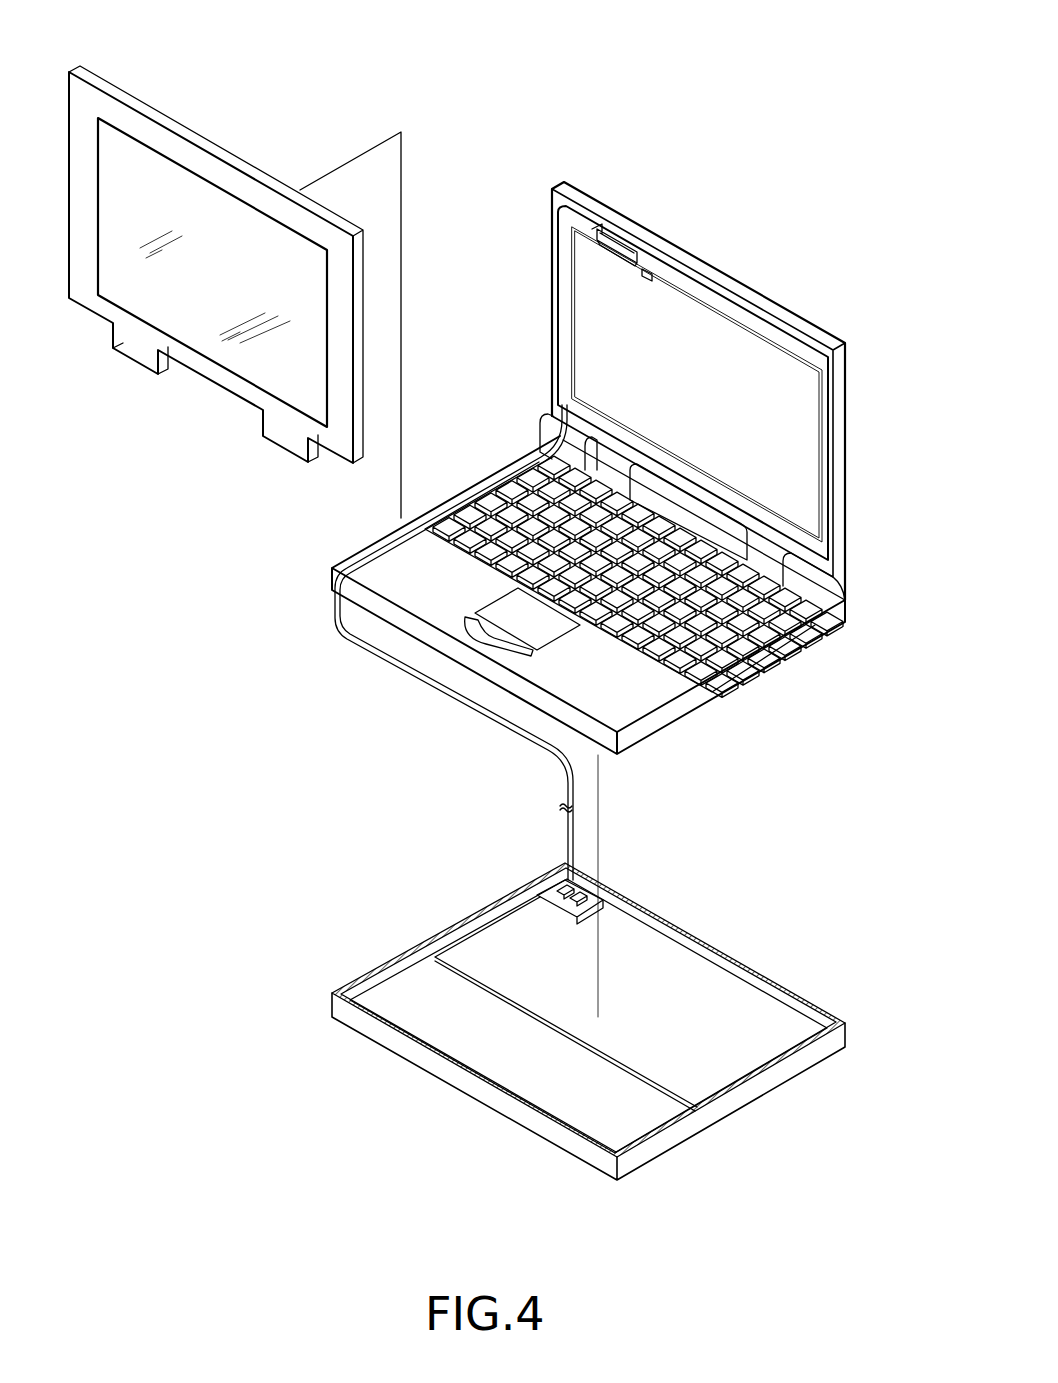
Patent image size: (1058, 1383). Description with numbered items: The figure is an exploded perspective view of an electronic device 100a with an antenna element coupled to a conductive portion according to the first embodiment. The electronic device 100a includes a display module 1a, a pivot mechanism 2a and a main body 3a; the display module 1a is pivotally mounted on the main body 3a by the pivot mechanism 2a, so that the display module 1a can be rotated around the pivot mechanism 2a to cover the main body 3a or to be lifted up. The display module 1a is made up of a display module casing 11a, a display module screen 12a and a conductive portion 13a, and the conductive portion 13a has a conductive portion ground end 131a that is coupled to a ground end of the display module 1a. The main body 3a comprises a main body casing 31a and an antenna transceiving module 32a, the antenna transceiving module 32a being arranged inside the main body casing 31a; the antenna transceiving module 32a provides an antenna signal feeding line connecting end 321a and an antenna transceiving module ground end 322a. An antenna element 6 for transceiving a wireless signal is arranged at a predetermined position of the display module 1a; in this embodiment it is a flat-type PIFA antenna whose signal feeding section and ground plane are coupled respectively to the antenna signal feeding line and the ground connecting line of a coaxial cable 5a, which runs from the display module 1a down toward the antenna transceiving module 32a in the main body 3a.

The display module 1a is at (673, 53).
The electronic device 100a is at (778, 168).
The antenna element 6 is at (626, 231).
The conductive portion ground end 131a is at (648, 272).
The display module casing 11a is at (785, 317).
The pivot mechanism 2a is at (550, 422).
The conductive portion 13a is at (798, 477).
The display module screen 12a is at (238, 362).
The coaxial cable 5a is at (420, 678).
The antenna signal feeding line connecting end 321a is at (559, 890).
The antenna transceiving module 32a is at (533, 875).
The antenna transceiving module ground end 322a is at (573, 911).
The main body casing 31a is at (782, 1075).
The main body 3a is at (872, 598).